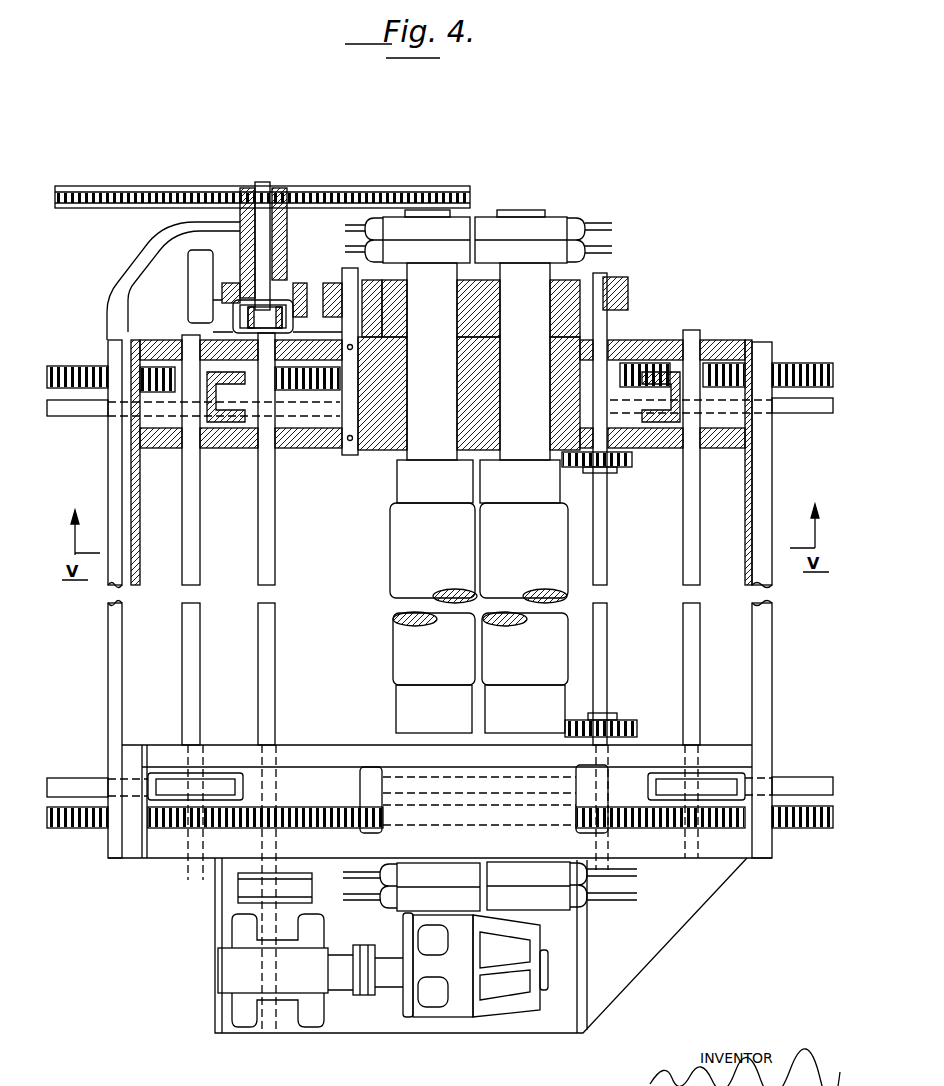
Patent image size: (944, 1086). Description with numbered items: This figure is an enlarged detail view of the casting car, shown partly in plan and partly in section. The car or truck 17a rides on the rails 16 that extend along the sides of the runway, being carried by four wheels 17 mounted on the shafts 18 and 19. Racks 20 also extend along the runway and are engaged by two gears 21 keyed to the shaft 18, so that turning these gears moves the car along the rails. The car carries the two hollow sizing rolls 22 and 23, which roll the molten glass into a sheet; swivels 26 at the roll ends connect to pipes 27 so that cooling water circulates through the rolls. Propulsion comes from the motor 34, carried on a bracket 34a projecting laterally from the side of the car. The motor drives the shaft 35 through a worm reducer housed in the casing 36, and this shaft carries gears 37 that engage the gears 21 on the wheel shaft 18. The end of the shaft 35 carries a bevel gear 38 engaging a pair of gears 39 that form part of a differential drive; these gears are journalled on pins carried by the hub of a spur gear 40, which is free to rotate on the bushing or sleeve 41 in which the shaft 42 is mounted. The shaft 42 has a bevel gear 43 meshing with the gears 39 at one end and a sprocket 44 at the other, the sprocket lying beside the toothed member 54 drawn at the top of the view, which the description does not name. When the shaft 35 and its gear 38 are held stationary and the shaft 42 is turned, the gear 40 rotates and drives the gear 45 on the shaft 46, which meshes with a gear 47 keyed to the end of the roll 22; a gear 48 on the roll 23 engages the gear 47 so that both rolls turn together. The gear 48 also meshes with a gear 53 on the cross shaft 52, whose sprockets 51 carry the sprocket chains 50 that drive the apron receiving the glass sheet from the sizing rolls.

The rails 16 is at (815, 777).
The wheels 17 is at (712, 773).
The car or truck 17a is at (665, 862).
The shaft 18 is at (184, 554).
The shaft 19 is at (692, 551).
The racks 20 is at (812, 828).
The gears 21 is at (172, 812).
The sizing roll 22 is at (390, 532).
The sizing roll 23 is at (555, 531).
The swivels 26 is at (520, 895).
The pipes 27 is at (620, 898).
The motor 34 is at (462, 1000).
The bracket 34a is at (648, 948).
The shaft 35 is at (275, 561).
The casing 36 is at (235, 980).
The gears 37 is at (300, 807).
The bevel gear 38 is at (233, 324).
The gears 39 is at (248, 312).
The spur gear 40 is at (190, 275).
The bushing or sleeve 41 is at (270, 234).
The shaft 42 is at (240, 224).
The bevel gear 43 is at (284, 262).
The sprocket 44 is at (255, 195).
The gear 45 is at (380, 296).
The shaft 46 is at (352, 455).
The gear 47 is at (398, 308).
The gear 48 is at (488, 292).
The sprocket chains 50 is at (637, 729).
The sprockets 51 is at (605, 713).
The cross shaft 52 is at (607, 580).
The gear 53 is at (627, 280).
The rack 54 is at (98, 186).